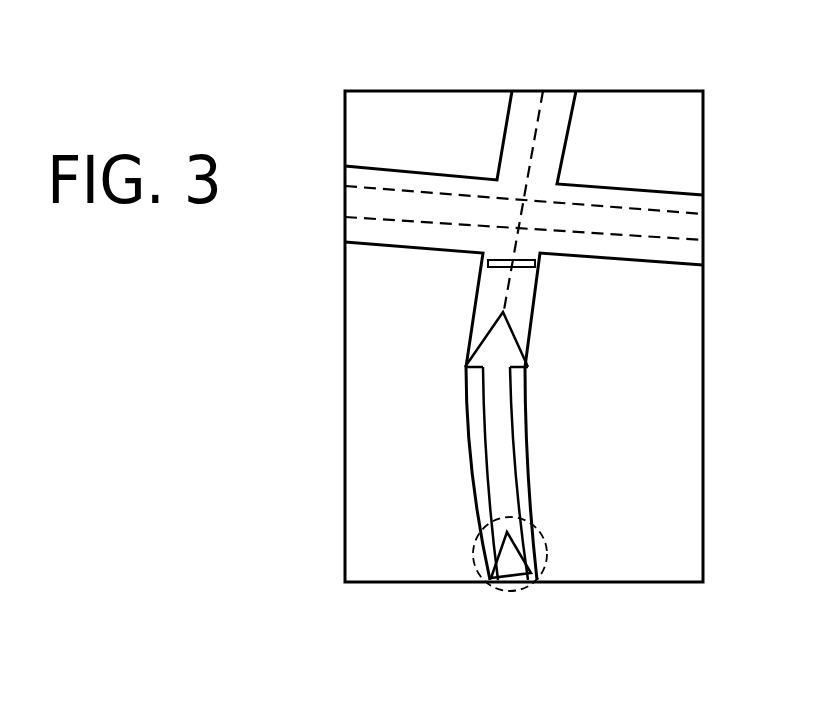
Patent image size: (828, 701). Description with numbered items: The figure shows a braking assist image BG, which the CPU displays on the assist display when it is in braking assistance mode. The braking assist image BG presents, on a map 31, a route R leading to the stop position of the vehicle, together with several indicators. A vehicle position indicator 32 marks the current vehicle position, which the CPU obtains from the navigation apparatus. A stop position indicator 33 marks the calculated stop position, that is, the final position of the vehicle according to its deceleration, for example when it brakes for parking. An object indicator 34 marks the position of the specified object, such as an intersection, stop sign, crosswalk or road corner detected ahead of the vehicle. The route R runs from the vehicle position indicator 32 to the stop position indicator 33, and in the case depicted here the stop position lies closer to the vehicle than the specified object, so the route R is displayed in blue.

The braking assist image BG is at (672, 100).
The map 31 is at (423, 338).
The vehicle position indicator 32 is at (512, 548).
The stop position indicator 33 is at (505, 338).
The object indicator 34 is at (526, 270).
The route R is at (500, 438).